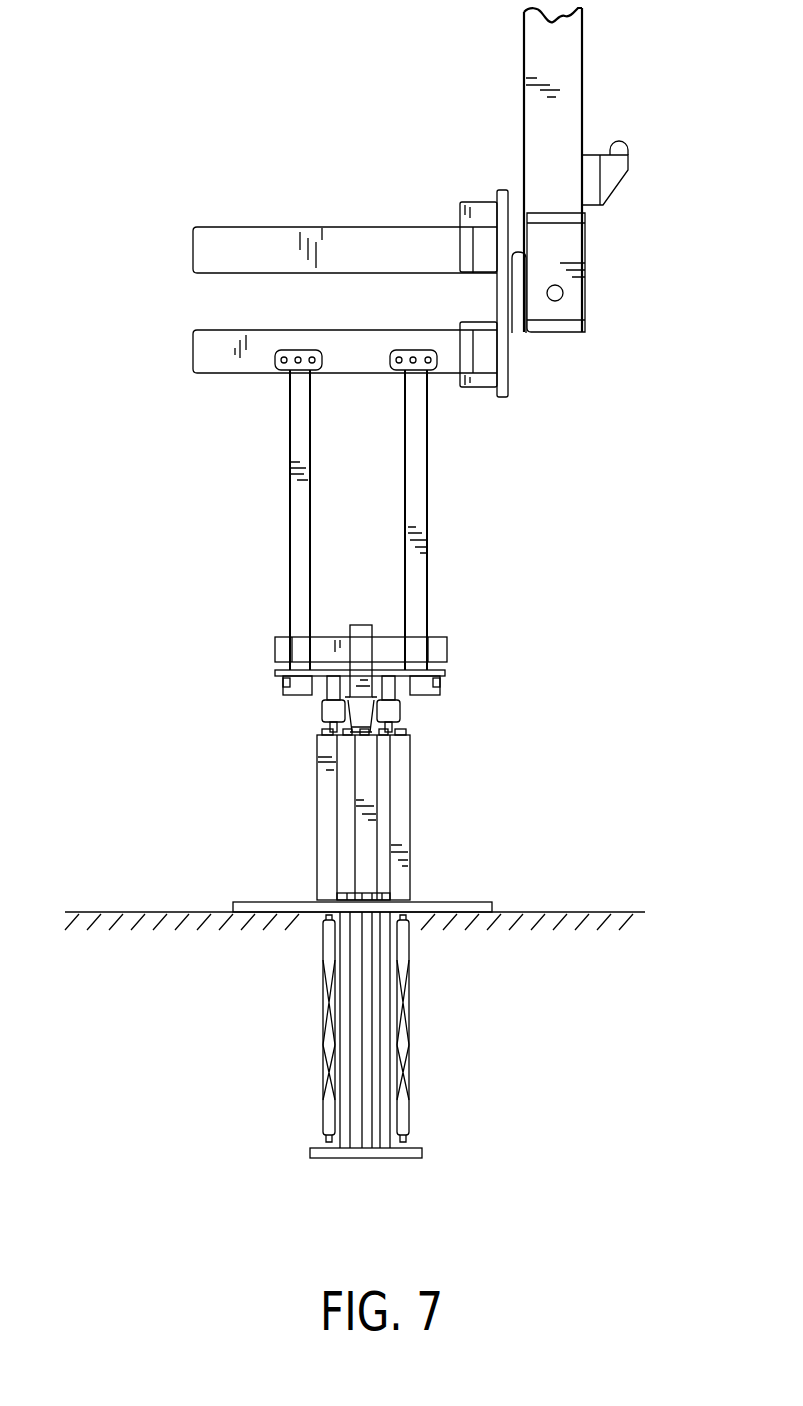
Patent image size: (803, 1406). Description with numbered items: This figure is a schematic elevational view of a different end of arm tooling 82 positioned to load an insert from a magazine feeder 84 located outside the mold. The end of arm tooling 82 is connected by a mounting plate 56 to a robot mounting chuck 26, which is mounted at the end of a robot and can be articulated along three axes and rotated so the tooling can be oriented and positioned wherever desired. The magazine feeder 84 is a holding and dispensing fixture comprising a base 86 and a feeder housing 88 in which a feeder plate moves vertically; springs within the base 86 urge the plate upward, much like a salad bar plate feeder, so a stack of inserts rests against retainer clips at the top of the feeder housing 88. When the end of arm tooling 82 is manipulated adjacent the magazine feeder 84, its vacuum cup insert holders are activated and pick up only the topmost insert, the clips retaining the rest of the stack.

The robot mounting chuck 26 is at (580, 333).
The mounting plate 56 is at (510, 383).
The end of arm tooling 82 is at (188, 463).
The magazine feeder 84 is at (324, 796).
The base 86 is at (410, 1032).
The feeder housing 88 is at (410, 810).